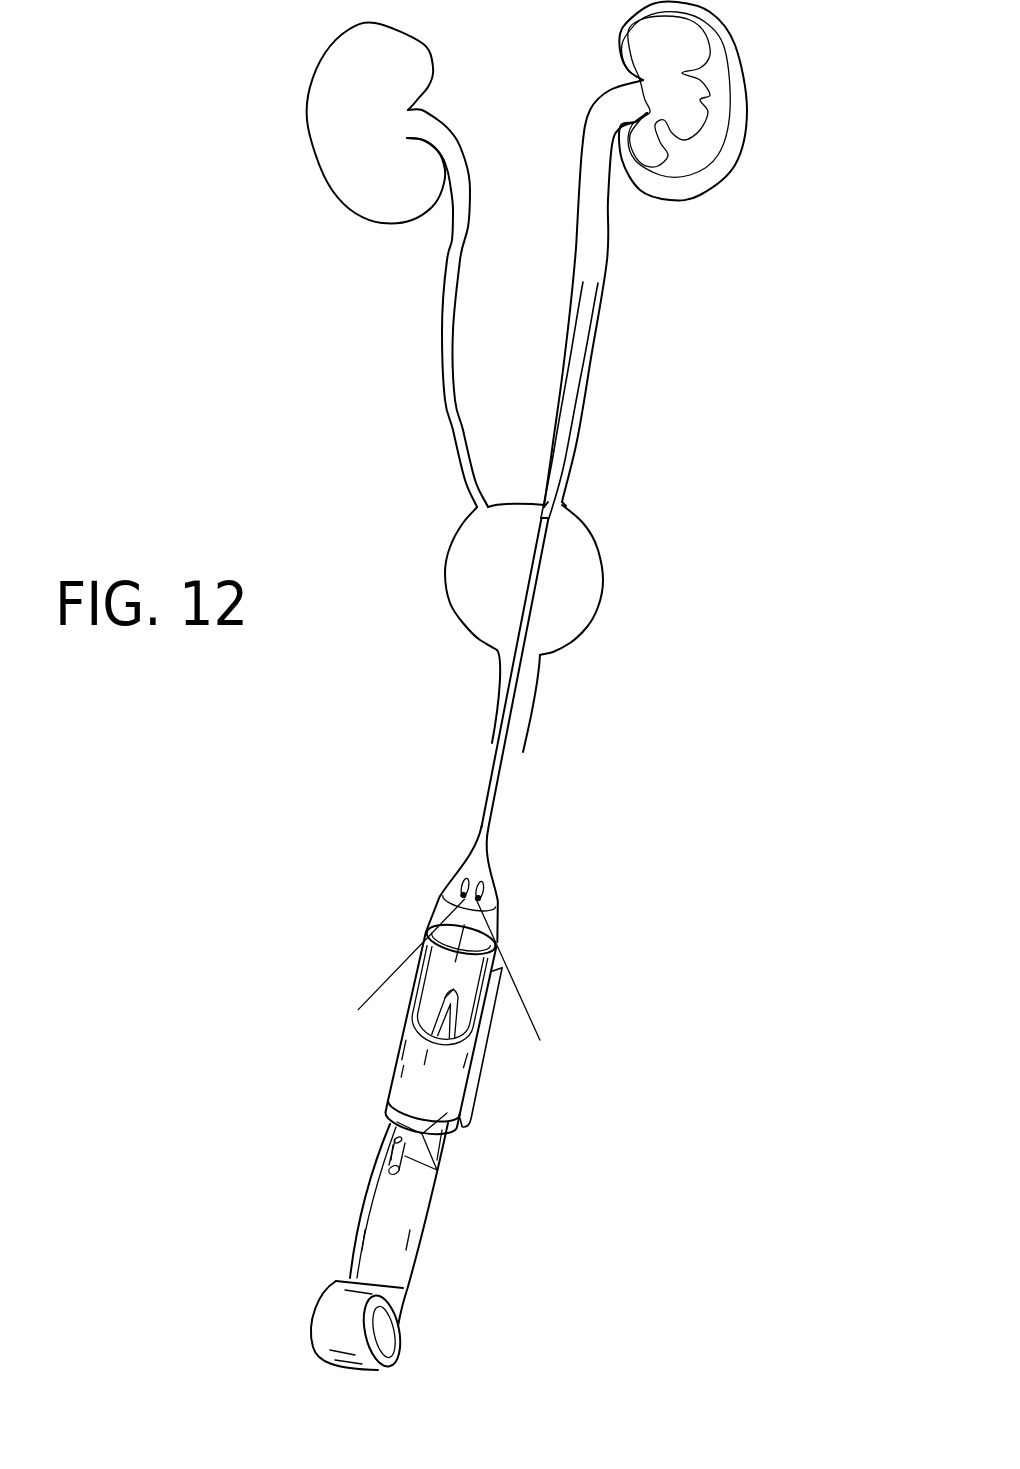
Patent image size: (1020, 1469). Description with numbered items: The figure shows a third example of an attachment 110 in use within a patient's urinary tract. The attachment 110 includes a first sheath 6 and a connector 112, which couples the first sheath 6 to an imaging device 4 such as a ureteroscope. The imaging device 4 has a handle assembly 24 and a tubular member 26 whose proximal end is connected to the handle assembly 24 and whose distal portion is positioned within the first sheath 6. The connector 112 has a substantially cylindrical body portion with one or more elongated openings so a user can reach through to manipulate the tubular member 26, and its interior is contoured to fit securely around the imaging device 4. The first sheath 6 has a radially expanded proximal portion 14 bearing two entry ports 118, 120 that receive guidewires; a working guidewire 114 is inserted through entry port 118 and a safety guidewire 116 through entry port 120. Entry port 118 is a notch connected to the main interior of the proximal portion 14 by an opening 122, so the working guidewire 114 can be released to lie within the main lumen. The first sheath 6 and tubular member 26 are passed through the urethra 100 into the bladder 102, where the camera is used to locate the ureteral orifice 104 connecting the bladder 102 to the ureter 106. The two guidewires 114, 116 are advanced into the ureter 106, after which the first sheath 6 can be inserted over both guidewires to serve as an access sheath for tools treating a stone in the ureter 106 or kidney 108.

The imaging device 4 is at (328, 1243).
The first sheath 6 is at (526, 597).
The proximal portion 14 is at (473, 867).
The handle assembly 24 is at (415, 1235).
The tubular member 26 is at (478, 1102).
The urethra 100 is at (530, 703).
The bladder 102 is at (592, 558).
The ureteral orifice 104 is at (562, 497).
The ureter 106 is at (597, 243).
The kidney 108 is at (737, 95).
The attachment 110 is at (320, 1021).
The connector 112 is at (422, 1063).
The working guidewire 114 is at (575, 302).
The safety guidewire 116 is at (583, 367).
The entry port 118 is at (458, 893).
The entry port 120 is at (487, 897).
The opening 122 is at (463, 900).